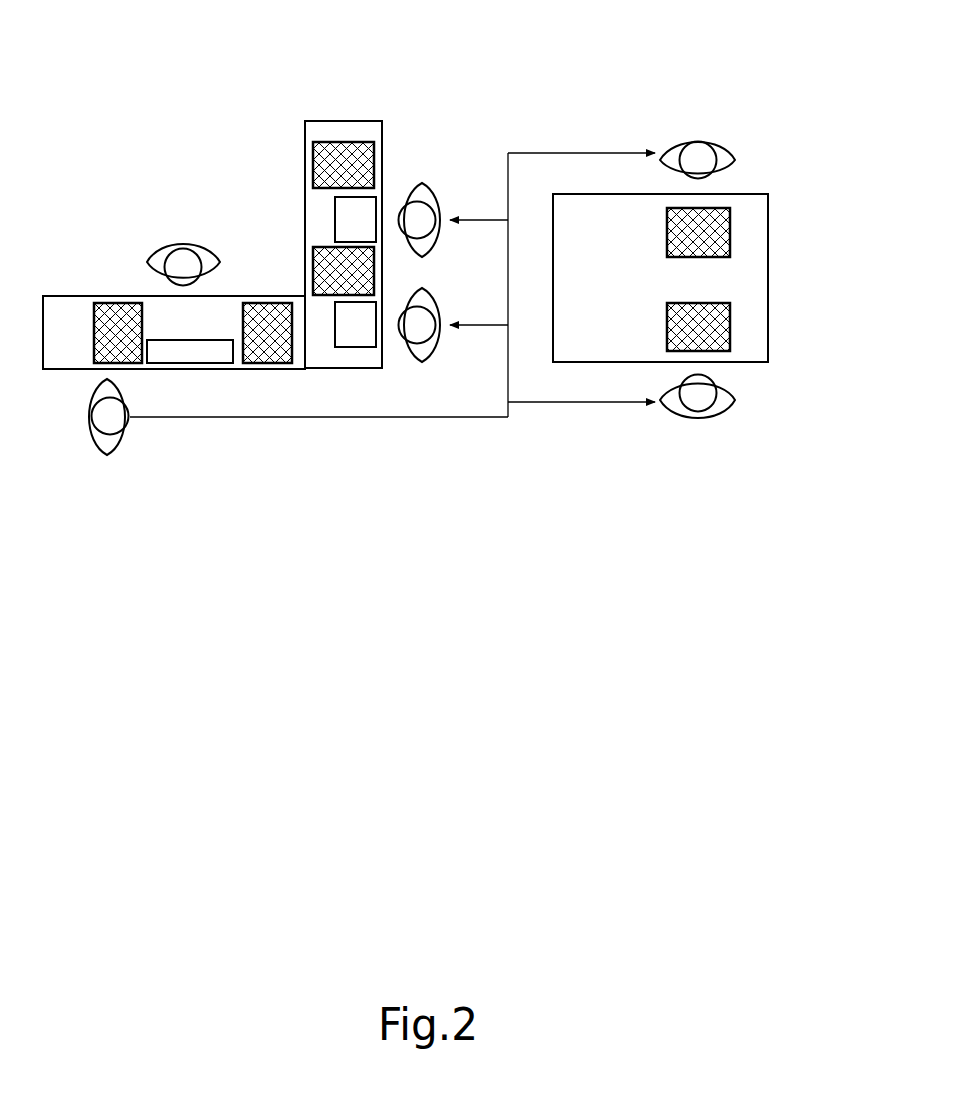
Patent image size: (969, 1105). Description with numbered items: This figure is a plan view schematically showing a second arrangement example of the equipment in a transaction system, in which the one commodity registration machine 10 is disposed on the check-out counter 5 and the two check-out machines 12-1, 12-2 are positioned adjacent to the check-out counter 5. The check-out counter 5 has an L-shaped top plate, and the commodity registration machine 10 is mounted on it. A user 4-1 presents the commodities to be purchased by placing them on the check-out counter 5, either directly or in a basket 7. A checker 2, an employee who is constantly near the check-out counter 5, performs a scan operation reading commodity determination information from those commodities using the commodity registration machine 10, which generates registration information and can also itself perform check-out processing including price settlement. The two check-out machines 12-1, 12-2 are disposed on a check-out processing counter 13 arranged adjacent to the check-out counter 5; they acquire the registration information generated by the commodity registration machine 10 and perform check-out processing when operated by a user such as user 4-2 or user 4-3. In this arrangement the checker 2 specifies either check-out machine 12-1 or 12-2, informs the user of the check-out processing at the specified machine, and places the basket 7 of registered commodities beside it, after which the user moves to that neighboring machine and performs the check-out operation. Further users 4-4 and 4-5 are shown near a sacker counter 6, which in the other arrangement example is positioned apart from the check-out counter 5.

The checker 2 is at (200, 246).
The user 4-1 is at (90, 442).
The user 4-2 is at (433, 297).
The user 4-3 is at (433, 192).
The user 4-4 is at (722, 420).
The user 4-5 is at (718, 141).
The check-out counter 5 is at (62, 305).
The sacker counter 6 is at (750, 198).
The basket 7 is at (112, 305).
The commodity registration machine 10 is at (203, 358).
The check-out machine 12-1 is at (357, 342).
The check-out machine 12-2 is at (343, 218).
The check-out processing counter 13 is at (323, 358).